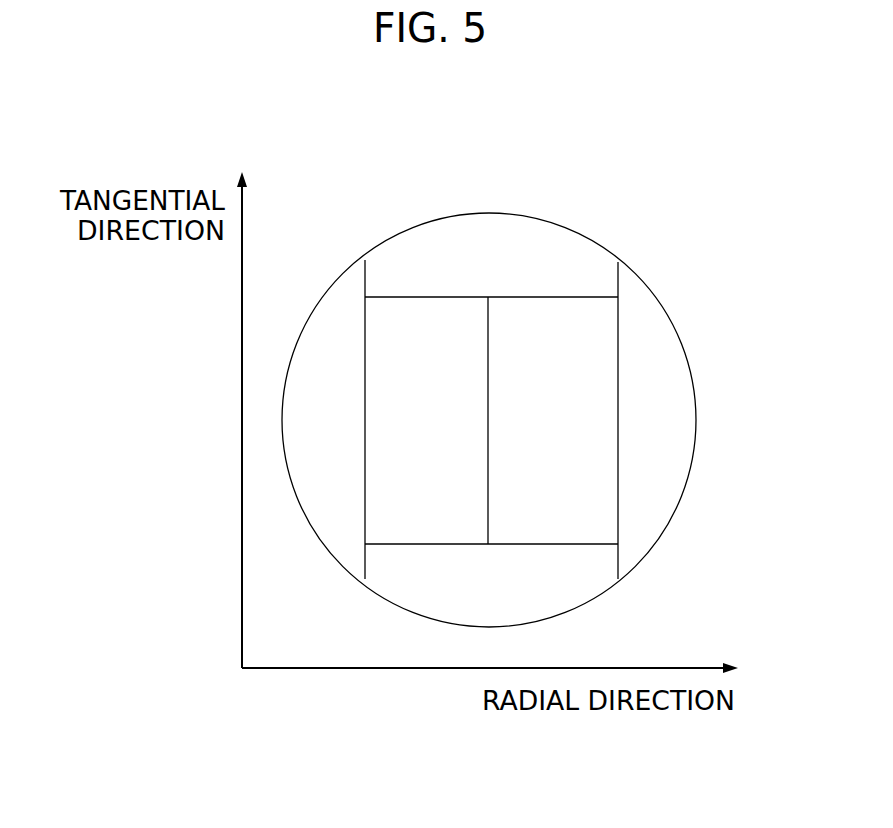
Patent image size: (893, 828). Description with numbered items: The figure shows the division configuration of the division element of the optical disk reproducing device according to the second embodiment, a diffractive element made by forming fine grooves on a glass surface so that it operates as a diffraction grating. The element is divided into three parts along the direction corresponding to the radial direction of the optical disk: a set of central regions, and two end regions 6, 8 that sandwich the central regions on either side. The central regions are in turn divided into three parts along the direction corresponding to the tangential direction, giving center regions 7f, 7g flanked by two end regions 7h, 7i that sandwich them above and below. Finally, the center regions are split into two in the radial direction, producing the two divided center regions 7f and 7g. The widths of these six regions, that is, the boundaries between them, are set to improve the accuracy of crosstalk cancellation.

The end region 6 is at (345, 297).
The center region 7f is at (427, 332).
The center region 7g is at (543, 333).
The end region 7h is at (565, 265).
The end region 7i is at (485, 583).
The end region 8 is at (640, 297).